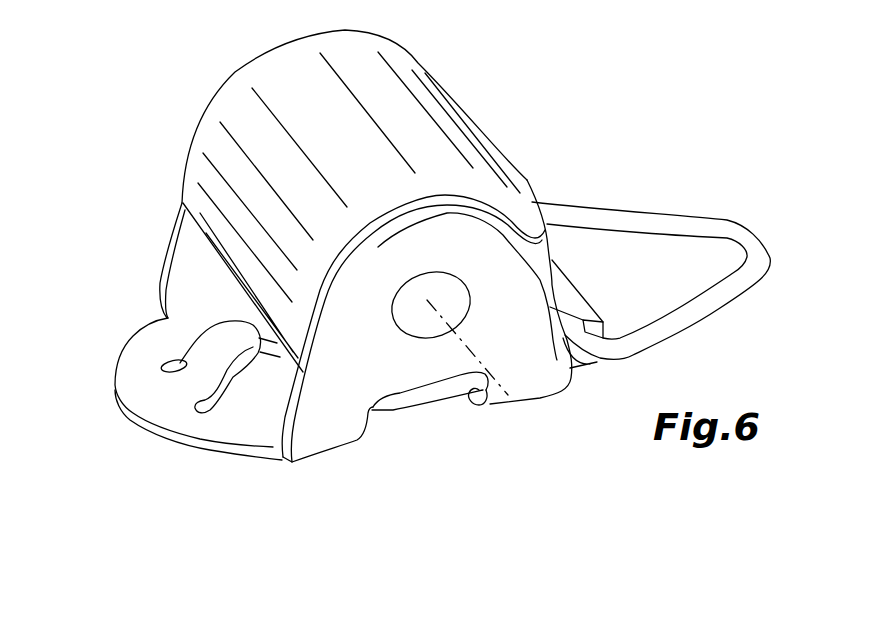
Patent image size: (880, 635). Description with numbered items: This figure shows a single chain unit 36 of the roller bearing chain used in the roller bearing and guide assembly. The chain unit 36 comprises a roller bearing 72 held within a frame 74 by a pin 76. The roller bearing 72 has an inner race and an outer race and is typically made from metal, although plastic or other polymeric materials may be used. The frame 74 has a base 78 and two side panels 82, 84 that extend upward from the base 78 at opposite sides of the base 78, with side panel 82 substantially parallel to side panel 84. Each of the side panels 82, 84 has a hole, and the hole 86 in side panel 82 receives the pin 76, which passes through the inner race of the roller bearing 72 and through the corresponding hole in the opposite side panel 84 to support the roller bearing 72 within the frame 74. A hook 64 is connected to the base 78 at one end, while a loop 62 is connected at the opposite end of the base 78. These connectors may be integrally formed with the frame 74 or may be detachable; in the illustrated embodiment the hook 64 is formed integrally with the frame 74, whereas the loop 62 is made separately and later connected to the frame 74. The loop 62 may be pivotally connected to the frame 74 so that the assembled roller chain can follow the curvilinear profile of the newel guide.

The chain unit 36 is at (505, 101).
The loop 62 is at (707, 225).
The hook 64 is at (183, 383).
The roller bearing 72 is at (218, 135).
The frame 74 is at (524, 354).
The pin 76 is at (422, 303).
The base 78 is at (235, 432).
The side panel 82 is at (343, 383).
The side panel 84 is at (200, 290).
The hole 86 is at (437, 337).